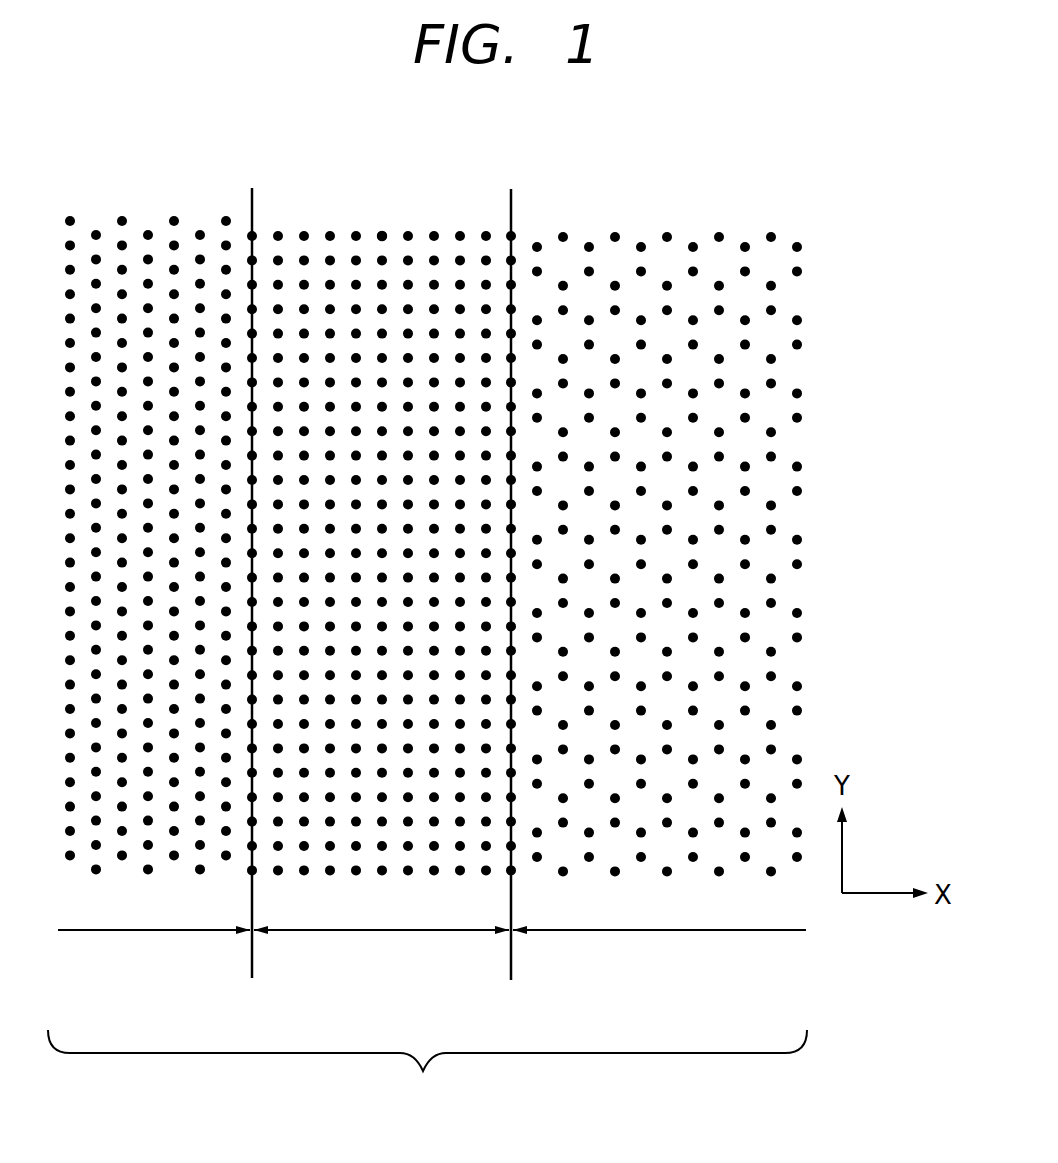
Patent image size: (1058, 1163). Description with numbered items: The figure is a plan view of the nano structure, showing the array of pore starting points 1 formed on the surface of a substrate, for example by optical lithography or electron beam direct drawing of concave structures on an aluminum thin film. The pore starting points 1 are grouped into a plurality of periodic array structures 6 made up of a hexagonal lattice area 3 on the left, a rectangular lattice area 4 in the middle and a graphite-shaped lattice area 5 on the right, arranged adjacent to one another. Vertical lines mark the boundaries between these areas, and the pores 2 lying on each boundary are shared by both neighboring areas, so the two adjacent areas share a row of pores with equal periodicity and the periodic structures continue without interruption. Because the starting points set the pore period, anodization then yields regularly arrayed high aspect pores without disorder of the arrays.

The pore starting points 1 is at (384, 231).
The pores 2 is at (515, 237).
The hexagonal lattice area 3 is at (128, 932).
The rectangular lattice area 4 is at (380, 932).
The graphite-shaped lattice area 5 is at (665, 932).
The periodic array structures 6 is at (427, 1069).